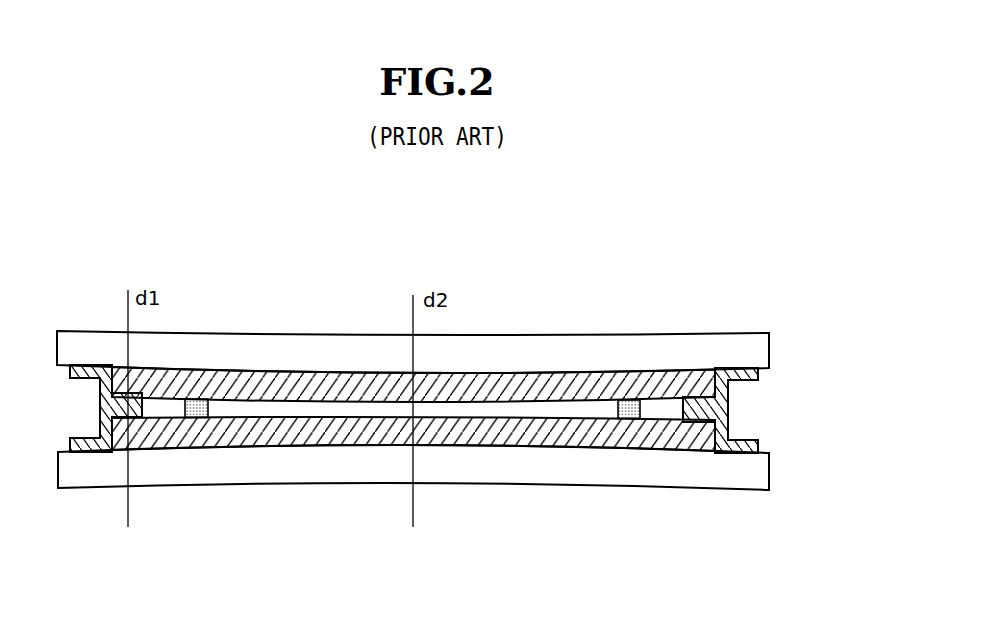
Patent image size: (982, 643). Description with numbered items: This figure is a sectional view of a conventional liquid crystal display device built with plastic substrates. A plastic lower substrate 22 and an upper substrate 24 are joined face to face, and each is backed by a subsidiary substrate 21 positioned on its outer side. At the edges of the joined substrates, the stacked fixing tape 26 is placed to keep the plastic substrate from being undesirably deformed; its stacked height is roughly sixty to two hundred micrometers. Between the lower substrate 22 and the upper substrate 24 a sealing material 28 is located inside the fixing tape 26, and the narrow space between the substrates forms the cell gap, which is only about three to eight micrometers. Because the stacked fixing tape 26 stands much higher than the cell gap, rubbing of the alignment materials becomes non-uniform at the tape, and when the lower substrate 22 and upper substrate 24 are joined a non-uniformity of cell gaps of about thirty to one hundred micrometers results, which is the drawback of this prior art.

The subsidiary substrate 21 is at (755, 347).
The plastic lower substrate 22 is at (332, 425).
The upper substrate 24 is at (334, 384).
The stacked fixing tape 26 is at (728, 398).
The sealing material 28 is at (629, 419).